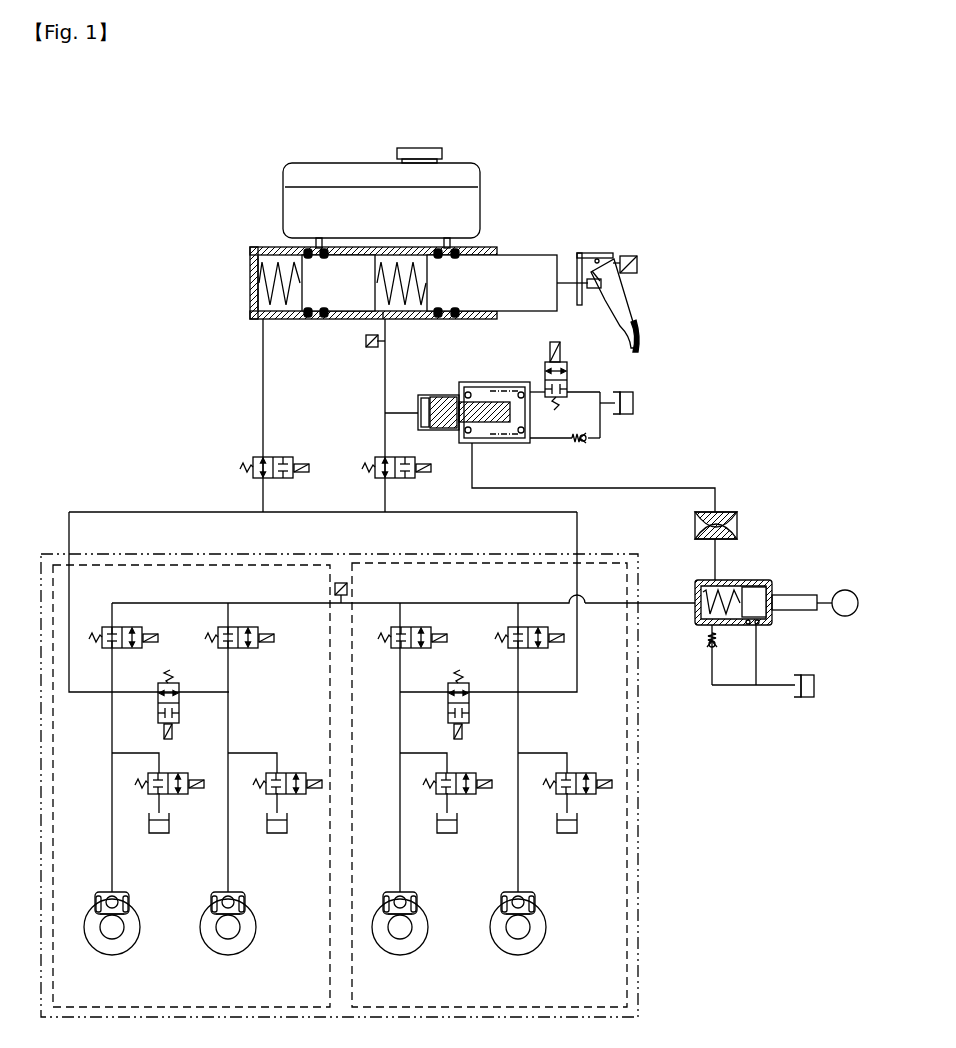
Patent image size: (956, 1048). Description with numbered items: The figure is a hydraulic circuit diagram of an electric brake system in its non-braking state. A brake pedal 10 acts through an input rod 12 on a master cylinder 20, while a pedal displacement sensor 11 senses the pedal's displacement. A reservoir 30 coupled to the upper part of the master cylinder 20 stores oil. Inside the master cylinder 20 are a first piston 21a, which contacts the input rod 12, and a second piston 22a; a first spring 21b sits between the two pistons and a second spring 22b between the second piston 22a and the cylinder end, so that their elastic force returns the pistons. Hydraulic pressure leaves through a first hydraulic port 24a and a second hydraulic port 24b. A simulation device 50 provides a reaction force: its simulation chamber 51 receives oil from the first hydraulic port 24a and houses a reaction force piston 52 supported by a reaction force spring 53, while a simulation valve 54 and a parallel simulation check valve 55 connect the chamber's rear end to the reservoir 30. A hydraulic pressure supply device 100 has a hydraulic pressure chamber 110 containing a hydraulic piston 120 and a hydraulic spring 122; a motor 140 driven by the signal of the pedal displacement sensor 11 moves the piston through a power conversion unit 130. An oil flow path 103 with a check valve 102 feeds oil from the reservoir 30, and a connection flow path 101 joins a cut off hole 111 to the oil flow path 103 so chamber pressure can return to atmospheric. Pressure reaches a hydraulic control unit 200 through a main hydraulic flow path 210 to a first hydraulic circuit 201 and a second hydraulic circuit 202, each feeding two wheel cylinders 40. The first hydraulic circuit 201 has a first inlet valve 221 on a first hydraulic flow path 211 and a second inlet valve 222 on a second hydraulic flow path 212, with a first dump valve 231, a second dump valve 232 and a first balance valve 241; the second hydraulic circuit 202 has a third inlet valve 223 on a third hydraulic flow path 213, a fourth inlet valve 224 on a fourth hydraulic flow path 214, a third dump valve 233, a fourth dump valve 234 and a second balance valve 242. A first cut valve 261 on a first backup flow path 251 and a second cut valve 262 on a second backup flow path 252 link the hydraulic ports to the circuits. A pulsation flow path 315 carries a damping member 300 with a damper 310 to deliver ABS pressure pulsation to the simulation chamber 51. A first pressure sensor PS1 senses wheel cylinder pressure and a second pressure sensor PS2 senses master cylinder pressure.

The brake pedal 10 is at (620, 298).
The pedal displacement sensor 11 is at (633, 257).
The input rod 12 is at (568, 281).
The master cylinder 20 is at (258, 246).
The first piston 21a is at (530, 257).
The first spring 21b is at (418, 300).
The second piston 22a is at (318, 312).
The second spring 22b is at (258, 285).
The first hydraulic port 24a is at (400, 320).
The second hydraulic port 24b is at (255, 318).
The reservoir 30 is at (311, 162).
The wheel cylinder 40 is at (100, 893).
The simulation device 50 is at (474, 386).
The simulation chamber 51 is at (494, 381).
The reaction force piston 52 is at (442, 394).
The reaction force spring 53 is at (469, 391).
The simulation valve 54 is at (568, 367).
The simulation check valve 55 is at (586, 446).
The hydraulic pressure supply device 100 is at (761, 566).
The connection flow path 101 is at (758, 650).
The check valve 102 is at (706, 652).
The oil flow path 103 is at (746, 687).
The hydraulic pressure chamber 110 is at (737, 579).
The cut off hole 111 is at (760, 628).
The hydraulic piston 120 is at (756, 586).
The hydraulic spring 122 is at (702, 585).
The power conversion unit 130 is at (792, 594).
The motor 140 is at (842, 589).
The hydraulic control unit 200 is at (333, 552).
The first hydraulic circuit 201 is at (379, 562).
The second hydraulic circuit 202 is at (291, 563).
The main hydraulic flow path 210 is at (664, 605).
The first hydraulic flow path 211 is at (520, 855).
The second hydraulic flow path 212 is at (402, 855).
The third hydraulic flow path 213 is at (230, 855).
The fourth hydraulic flow path 214 is at (114, 855).
The first inlet valve 221 is at (540, 625).
The second inlet valve 222 is at (424, 625).
The third inlet valve 223 is at (252, 625).
The fourth inlet valve 224 is at (136, 625).
The first dump valve 231 is at (587, 772).
The second dump valve 232 is at (469, 772).
The third dump valve 233 is at (299, 772).
The fourth dump valve 234 is at (183, 772).
The first balance valve 241 is at (464, 678).
The second balance valve 242 is at (174, 678).
The first backup flow path 251 is at (384, 389).
The second backup flow path 252 is at (262, 399).
The first cut valve 261 is at (392, 456).
The second cut valve 262 is at (282, 456).
The damping member 300 is at (720, 504).
The damper 310 is at (694, 522).
The pulsation flow path 315 is at (688, 486).
The first pressure sensor PS1 is at (348, 586).
The second pressure sensor PS2 is at (366, 345).